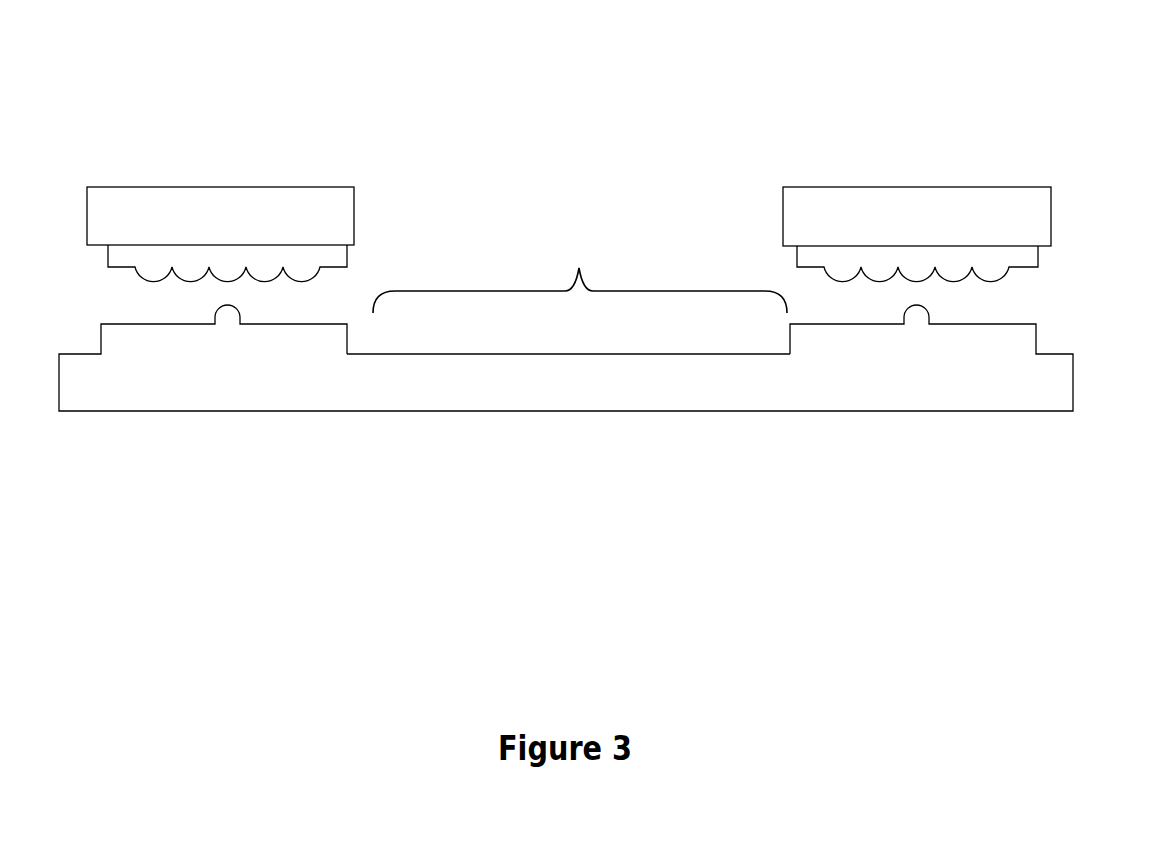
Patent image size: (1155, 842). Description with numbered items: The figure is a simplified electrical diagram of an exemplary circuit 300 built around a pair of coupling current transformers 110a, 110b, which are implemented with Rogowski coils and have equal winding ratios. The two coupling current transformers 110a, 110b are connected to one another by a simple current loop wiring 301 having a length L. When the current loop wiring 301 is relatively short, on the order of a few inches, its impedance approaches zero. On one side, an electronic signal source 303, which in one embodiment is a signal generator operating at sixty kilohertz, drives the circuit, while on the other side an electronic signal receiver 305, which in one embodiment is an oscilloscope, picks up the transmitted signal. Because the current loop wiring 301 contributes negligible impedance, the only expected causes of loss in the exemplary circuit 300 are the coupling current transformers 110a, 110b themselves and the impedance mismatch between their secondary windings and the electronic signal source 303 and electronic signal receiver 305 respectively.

The circuit 300 is at (1066, 80).
The electronic signal source 303 is at (292, 187).
The electronic signal receiver 305 is at (983, 188).
The current loop wiring 301 is at (568, 293).
The coupling current transformer 110a is at (102, 303).
The coupling current transformer 110b is at (1038, 295).